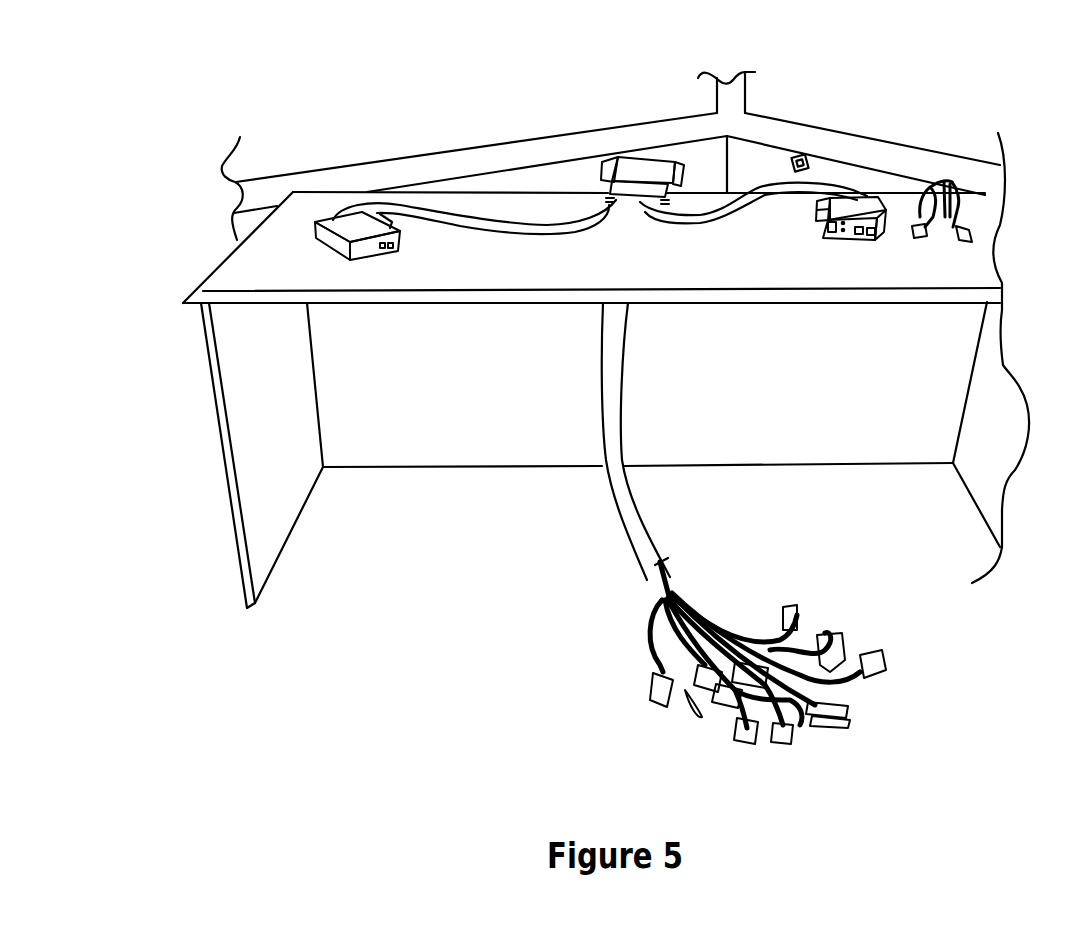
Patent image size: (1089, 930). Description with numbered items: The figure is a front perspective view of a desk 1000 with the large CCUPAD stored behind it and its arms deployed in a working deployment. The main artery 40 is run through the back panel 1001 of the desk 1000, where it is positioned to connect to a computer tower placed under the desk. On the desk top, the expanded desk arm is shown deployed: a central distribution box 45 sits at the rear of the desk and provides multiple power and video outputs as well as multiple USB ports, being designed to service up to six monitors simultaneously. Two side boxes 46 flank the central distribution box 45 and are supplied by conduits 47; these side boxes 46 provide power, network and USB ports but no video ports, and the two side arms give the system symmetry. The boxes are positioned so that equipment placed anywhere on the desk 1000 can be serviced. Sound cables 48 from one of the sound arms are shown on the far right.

The main artery 40 is at (610, 503).
The central distribution box 45 is at (607, 160).
The side boxes 46 is at (335, 250).
The conduits 47 is at (482, 230).
The sound cables 48 is at (962, 205).
The desk 1000 is at (220, 448).
The back panel 1001 is at (467, 370).